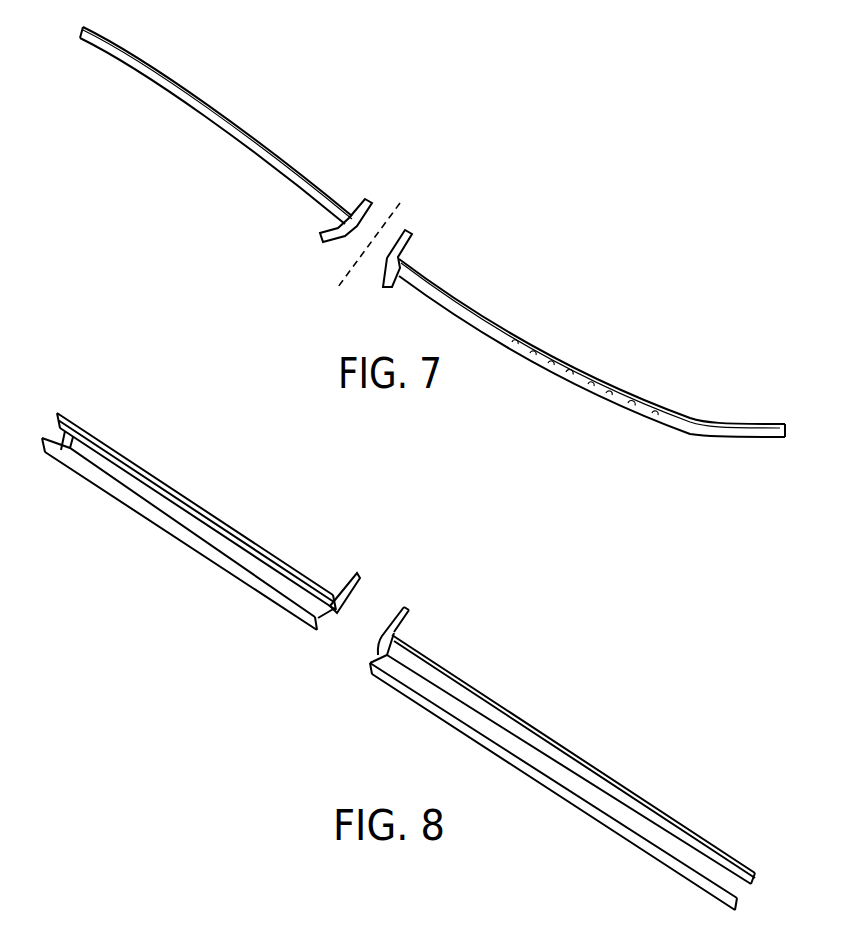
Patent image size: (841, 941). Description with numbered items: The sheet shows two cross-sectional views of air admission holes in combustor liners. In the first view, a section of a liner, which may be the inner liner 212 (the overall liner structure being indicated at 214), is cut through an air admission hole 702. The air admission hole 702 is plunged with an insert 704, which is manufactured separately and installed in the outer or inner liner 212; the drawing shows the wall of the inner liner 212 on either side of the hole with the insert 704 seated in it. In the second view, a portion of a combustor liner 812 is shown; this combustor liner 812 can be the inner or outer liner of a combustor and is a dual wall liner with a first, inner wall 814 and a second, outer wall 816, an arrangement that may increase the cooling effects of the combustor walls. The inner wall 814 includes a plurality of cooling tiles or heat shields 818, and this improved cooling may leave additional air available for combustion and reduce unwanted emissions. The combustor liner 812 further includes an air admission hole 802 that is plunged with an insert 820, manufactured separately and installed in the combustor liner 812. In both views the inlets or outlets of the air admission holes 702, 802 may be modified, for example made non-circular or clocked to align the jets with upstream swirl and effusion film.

In FIG. 7, the inner liner 212 is at (229, 134).
In FIG. 7, the strip assembly 214 is at (432, 232).
In FIG. 7, the air admission hole 702 is at (407, 219).
In FIG. 7, the insert 704 is at (414, 234).
In FIG. 8, the air admission hole 802 is at (562, 719).
In FIG. 8, the combustor liner 812 is at (640, 868).
In FIG. 8, the inner wall 814 is at (470, 683).
In FIG. 8, the outer wall 816 is at (443, 717).
In FIG. 8, the cooling tiles or heat shields 818 is at (560, 742).
In FIG. 8, the insert 820 is at (352, 573).